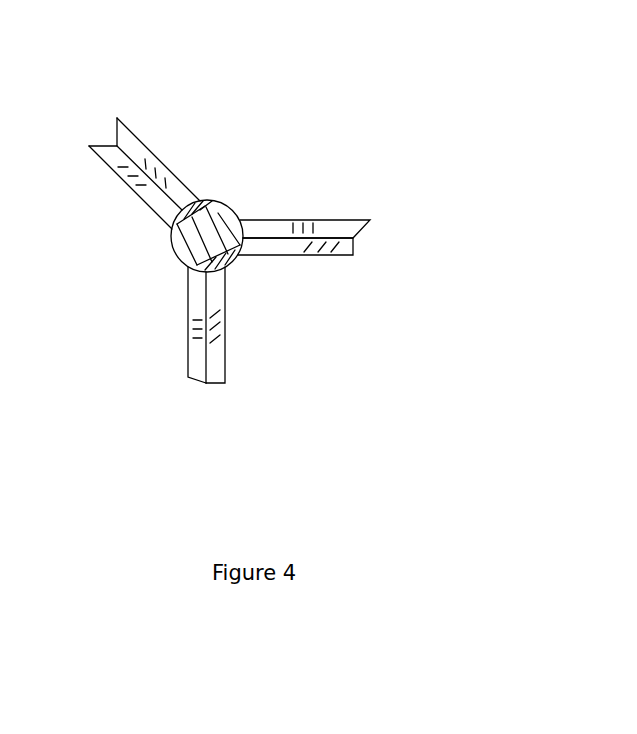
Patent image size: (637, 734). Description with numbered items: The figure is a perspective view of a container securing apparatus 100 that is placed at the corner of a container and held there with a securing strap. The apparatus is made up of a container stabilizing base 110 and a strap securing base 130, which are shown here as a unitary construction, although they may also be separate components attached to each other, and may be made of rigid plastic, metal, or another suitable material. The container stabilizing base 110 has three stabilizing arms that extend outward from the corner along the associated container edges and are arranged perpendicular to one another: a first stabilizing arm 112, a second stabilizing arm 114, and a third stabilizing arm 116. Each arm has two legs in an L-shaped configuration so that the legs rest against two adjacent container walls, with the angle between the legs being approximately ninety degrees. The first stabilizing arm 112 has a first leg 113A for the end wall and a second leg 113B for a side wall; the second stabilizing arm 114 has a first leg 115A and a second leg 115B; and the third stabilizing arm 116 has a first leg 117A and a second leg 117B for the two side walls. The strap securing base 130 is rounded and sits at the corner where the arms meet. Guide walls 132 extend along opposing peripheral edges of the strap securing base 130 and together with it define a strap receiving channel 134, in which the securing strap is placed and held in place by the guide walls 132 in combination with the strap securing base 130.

The container securing apparatus 100 is at (433, 72).
The container stabilizing base 110 is at (144, 221).
The first stabilizing arm 112 is at (183, 207).
The first leg 113A is at (127, 145).
The second leg 113B is at (117, 153).
The second stabilizing arm 114 is at (280, 219).
The first leg 115A is at (345, 230).
The second leg 115B is at (348, 251).
The third stabilizing arm 116 is at (225, 337).
The first leg 117A is at (217, 359).
The second leg 117B is at (197, 357).
The strap securing base 130 is at (248, 207).
The guide walls 132 is at (203, 200).
The strap receiving channel 134 is at (193, 242).